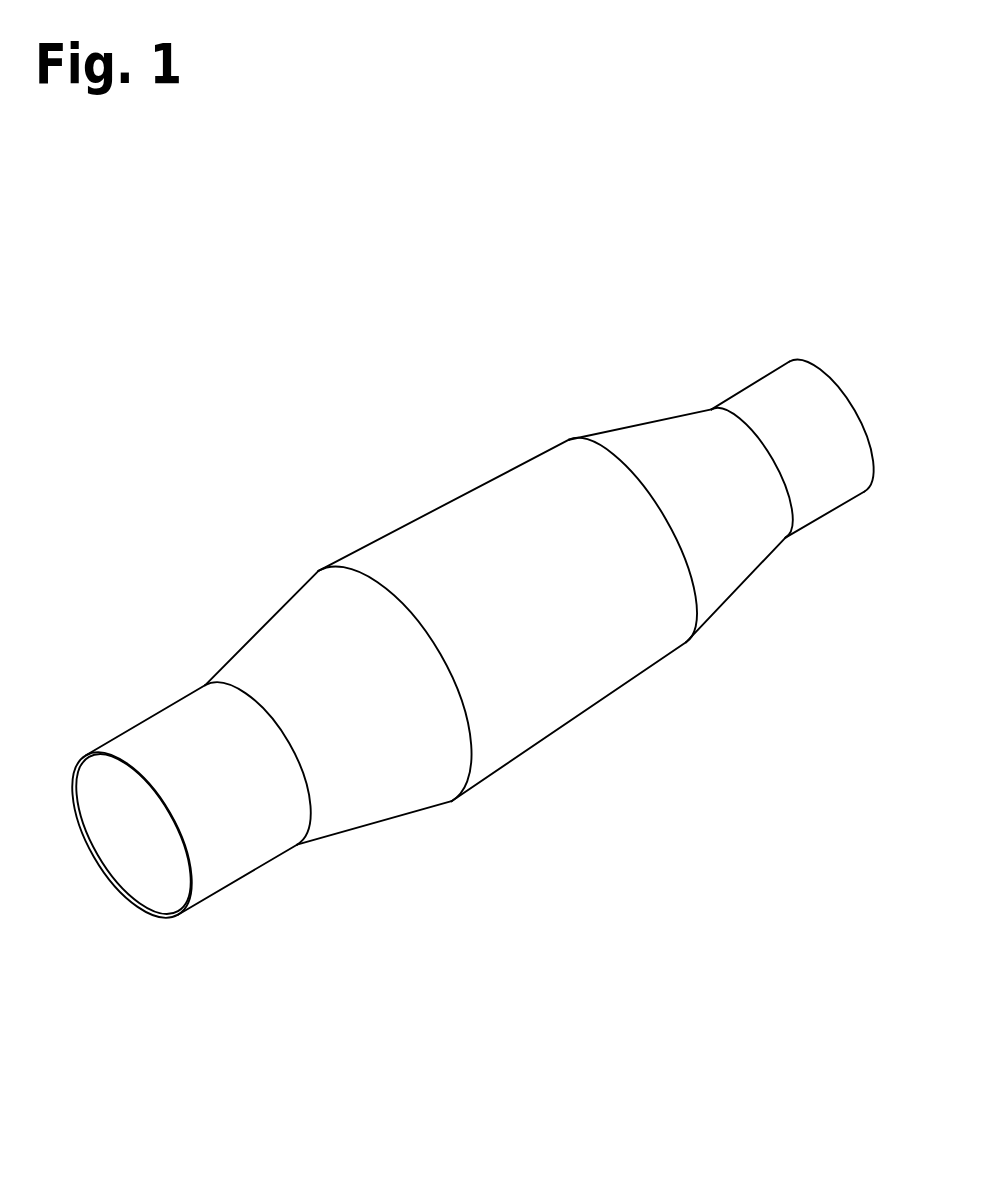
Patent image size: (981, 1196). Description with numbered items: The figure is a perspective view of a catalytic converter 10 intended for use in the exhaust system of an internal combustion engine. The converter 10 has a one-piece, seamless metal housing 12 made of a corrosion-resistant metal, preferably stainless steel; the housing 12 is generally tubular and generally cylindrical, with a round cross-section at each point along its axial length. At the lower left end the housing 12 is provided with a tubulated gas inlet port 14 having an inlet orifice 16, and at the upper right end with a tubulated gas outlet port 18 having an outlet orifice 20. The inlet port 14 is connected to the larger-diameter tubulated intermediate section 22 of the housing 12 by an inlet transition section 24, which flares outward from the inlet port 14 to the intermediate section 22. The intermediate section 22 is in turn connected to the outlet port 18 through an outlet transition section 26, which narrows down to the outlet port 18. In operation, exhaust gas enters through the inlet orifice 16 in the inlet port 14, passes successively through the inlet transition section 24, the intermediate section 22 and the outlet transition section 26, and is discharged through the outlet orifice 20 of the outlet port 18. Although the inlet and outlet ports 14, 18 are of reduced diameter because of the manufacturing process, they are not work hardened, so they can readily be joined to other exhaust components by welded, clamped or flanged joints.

The catalytic converter 10 is at (176, 288).
The housing 12 is at (484, 586).
The inlet port 14 is at (175, 834).
The inlet orifice 16 is at (117, 875).
The outlet port 18 is at (762, 378).
The outlet orifice 20 is at (848, 398).
The intermediate section 22 is at (467, 492).
The inlet transition section 24 is at (242, 649).
The outlet transition section 26 is at (641, 423).